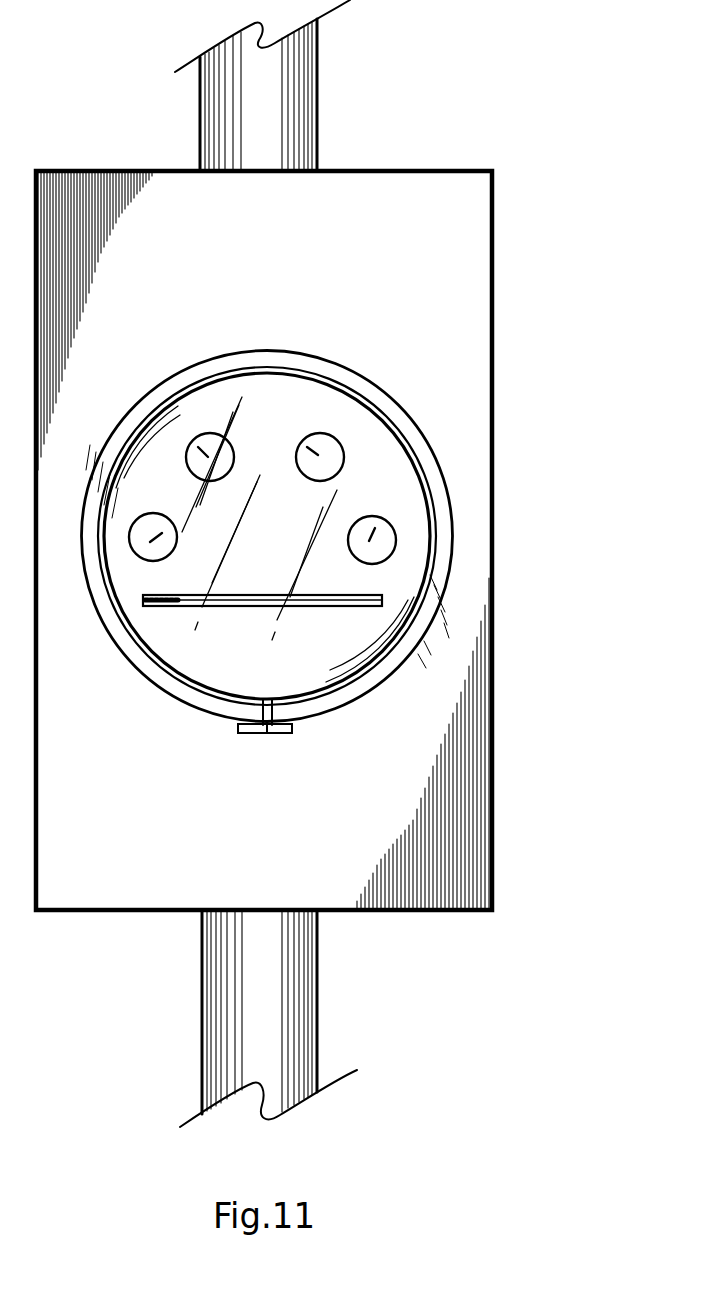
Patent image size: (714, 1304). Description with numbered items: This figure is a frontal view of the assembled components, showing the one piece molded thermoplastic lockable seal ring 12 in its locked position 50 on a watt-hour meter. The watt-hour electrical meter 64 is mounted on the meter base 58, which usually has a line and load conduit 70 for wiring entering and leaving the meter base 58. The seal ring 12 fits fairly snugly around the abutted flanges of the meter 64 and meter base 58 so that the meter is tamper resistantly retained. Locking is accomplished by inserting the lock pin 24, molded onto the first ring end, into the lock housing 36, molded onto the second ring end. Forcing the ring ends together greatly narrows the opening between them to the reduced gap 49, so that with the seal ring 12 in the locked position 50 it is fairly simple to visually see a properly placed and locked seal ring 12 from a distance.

The meter base 58 is at (440, 228).
The line and load conduit 70 is at (318, 80).
The lockable seal ring 12 is at (438, 503).
The watt-hour electrical meter 64 is at (362, 471).
The locked position 50 is at (269, 775).
The lock housing 36 is at (238, 728).
The reduced gap 49 is at (263, 732).
The lock pin 24 is at (276, 733).